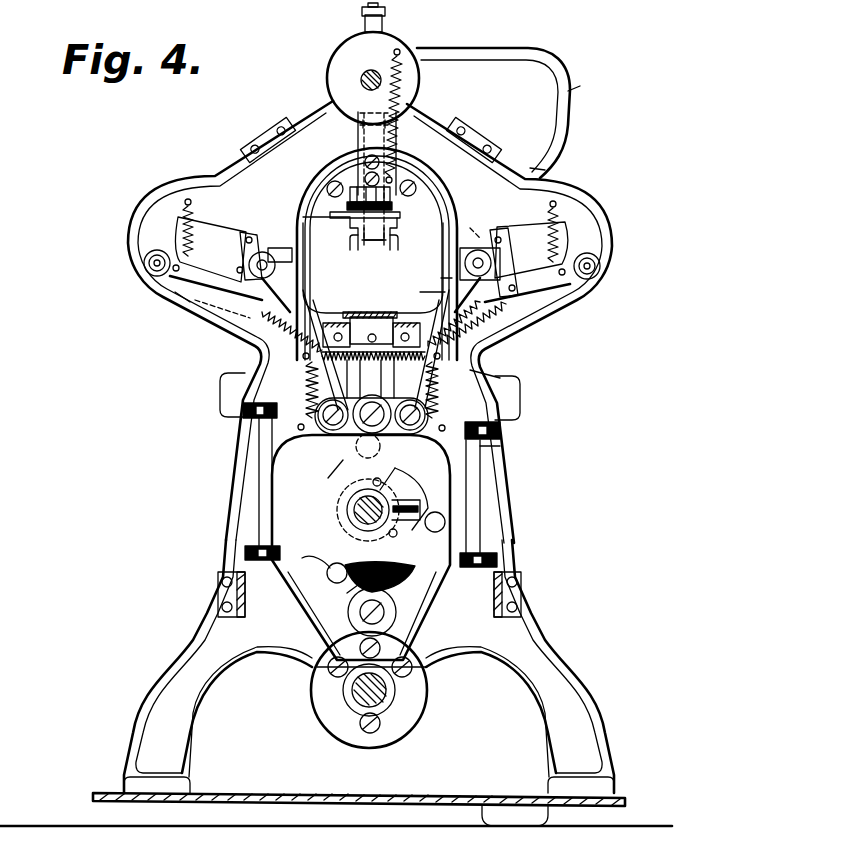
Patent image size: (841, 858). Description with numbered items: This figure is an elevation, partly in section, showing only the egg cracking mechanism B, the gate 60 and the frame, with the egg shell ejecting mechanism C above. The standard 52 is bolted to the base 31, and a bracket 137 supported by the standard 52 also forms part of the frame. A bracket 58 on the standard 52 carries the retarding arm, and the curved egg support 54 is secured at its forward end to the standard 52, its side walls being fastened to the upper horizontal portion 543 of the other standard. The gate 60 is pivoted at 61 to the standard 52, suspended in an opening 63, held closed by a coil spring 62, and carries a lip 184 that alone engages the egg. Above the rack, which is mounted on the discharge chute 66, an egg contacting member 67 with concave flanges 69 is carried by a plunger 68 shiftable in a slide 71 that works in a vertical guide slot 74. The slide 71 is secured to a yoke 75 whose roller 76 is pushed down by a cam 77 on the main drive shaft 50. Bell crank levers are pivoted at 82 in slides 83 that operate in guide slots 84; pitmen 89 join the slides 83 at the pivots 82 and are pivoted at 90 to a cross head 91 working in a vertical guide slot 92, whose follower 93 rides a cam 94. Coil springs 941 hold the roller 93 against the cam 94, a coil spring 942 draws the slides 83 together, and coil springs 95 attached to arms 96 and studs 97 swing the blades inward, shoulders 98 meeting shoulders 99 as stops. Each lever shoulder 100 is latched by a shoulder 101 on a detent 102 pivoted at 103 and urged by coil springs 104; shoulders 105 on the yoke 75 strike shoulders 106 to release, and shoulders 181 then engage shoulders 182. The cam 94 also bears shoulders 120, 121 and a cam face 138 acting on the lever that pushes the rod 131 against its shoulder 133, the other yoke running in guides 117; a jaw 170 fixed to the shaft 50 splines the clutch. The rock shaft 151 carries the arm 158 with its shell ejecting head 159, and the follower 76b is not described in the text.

The base 31 is at (270, 780).
The standard 52 is at (580, 673).
The arm 158 is at (495, 51).
The egg shell ejecting mechanism C is at (581, 92).
The shell ejecting head 159 is at (522, 168).
The rock shaft 151 is at (368, 78).
The roller 76 is at (402, 79).
The vertical guide slot 74 is at (358, 146).
The slide 71 is at (362, 131).
The pivot 61 is at (359, 185).
The bracket 58 is at (298, 117).
The gate 60 is at (309, 186).
The plunger 68 is at (418, 215).
The yoke 75 is at (444, 212).
The coil spring 62 is at (352, 220).
The lip 184 is at (367, 240).
The vertical flanges 69 is at (350, 244).
The egg contacting member 67 is at (390, 239).
The opening 63 is at (429, 236).
The shoulders 105 is at (307, 280).
The pitmen 89 is at (313, 298).
The shoulder 100 is at (448, 278).
The shoulders 106 is at (432, 297).
The curved egg support 54 is at (370, 328).
The upper horizontal portion 543 is at (373, 327).
The studs 97 is at (305, 364).
The pivots 90 is at (335, 432).
The cross head 91 is at (390, 435).
The follower 93 is at (357, 442).
The cam 94 is at (432, 480).
The main drive shaft 50 is at (347, 503).
The jaw 170 is at (352, 536).
The cam face 138 is at (409, 524).
The shoulder 121 is at (445, 521).
The cam 77 is at (360, 587).
The screw boss 76b is at (397, 607).
The longitudinally shiftable member 131 is at (352, 700).
The shoulder 133 is at (352, 694).
The coil spring 942 is at (298, 385).
The coil springs 941 is at (293, 421).
The discharge chute 66 is at (522, 392).
The vertical guide slot 92 is at (470, 374).
The guides 117 is at (482, 447).
The shoulder 120 is at (320, 560).
The bracket 137 is at (236, 622).
The pivot 103 is at (150, 262).
The coil springs 104 is at (185, 238).
The arms 96 is at (503, 253).
The shoulders 99 is at (260, 250).
The slides 83 is at (283, 248).
The pivots 82 is at (480, 250).
The guide slots 84 is at (511, 236).
The detent 102 is at (165, 280).
The shoulder 101 is at (212, 298).
The egg cracking mechanism B is at (183, 297).
The shoulders 181 is at (206, 306).
The coil springs 95 is at (247, 338).
The shoulders 182 is at (515, 313).
The shoulders 98 is at (490, 245).